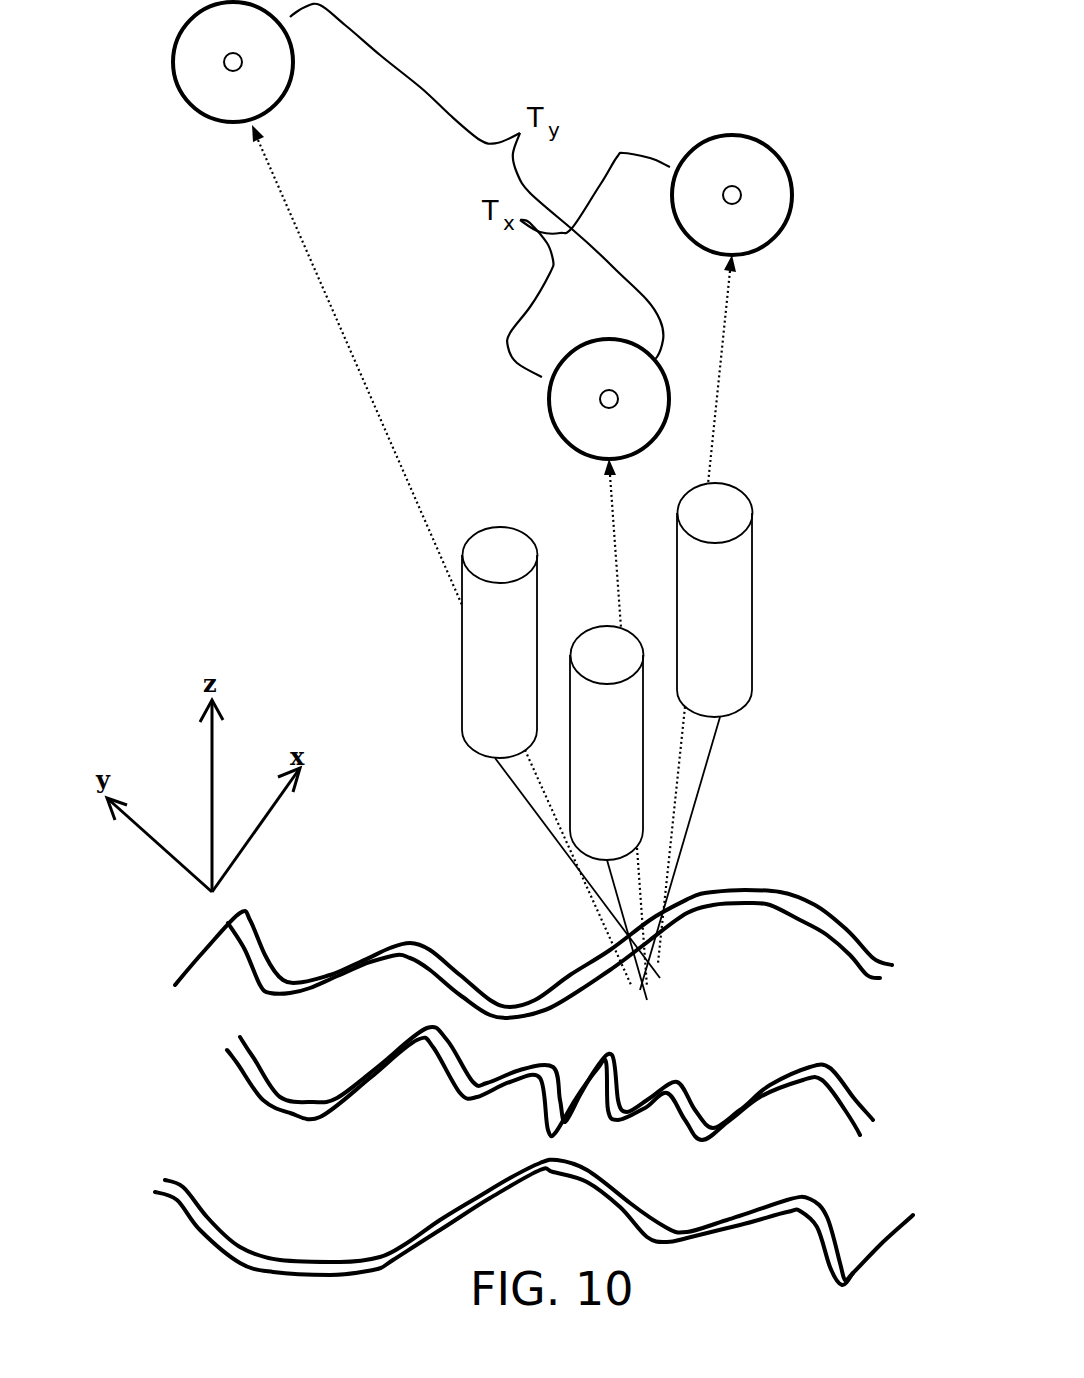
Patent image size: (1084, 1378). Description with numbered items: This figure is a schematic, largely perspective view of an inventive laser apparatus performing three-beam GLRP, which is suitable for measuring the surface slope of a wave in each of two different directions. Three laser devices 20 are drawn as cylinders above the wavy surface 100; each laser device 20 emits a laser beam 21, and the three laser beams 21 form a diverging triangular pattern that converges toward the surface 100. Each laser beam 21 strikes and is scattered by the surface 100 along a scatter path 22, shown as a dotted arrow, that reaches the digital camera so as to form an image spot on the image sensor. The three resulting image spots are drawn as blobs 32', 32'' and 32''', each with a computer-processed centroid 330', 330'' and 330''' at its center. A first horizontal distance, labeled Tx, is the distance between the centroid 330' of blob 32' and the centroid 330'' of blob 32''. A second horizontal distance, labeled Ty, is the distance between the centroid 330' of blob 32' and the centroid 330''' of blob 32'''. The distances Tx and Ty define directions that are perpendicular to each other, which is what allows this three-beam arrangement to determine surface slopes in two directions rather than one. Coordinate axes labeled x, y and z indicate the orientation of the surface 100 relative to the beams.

The laser device 20 is at (488, 652).
The laser beam 21 is at (512, 795).
The scatter path 22 is at (295, 243).
The blob 32' is at (533, 399).
The blob 32'' is at (770, 203).
The blob 32''' is at (187, 62).
The centroid 330' is at (525, 432).
The centroid 330'' is at (811, 137).
The centroid 330''' is at (168, 121).
The surface 100 is at (817, 892).